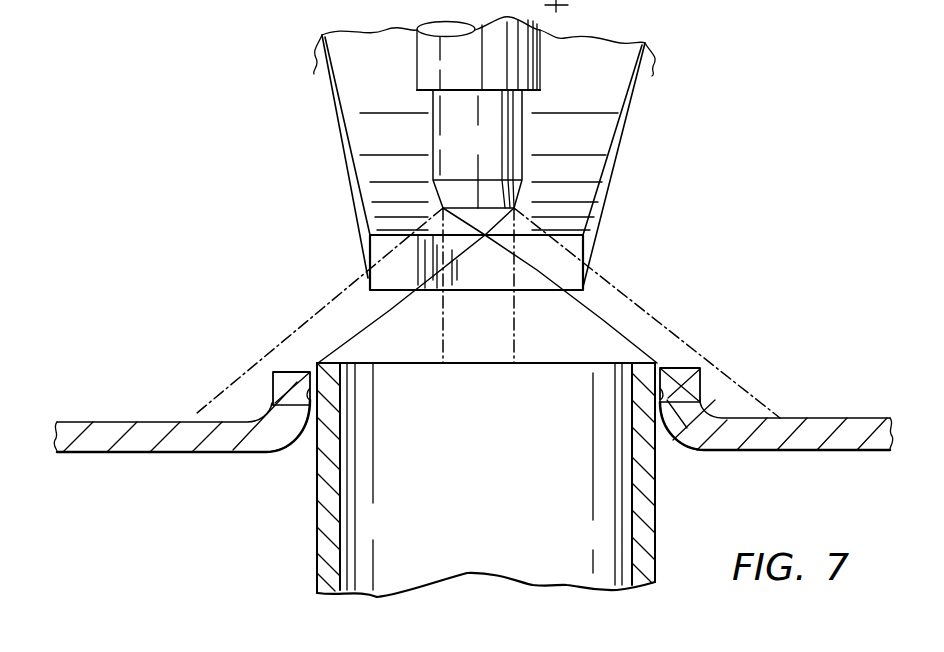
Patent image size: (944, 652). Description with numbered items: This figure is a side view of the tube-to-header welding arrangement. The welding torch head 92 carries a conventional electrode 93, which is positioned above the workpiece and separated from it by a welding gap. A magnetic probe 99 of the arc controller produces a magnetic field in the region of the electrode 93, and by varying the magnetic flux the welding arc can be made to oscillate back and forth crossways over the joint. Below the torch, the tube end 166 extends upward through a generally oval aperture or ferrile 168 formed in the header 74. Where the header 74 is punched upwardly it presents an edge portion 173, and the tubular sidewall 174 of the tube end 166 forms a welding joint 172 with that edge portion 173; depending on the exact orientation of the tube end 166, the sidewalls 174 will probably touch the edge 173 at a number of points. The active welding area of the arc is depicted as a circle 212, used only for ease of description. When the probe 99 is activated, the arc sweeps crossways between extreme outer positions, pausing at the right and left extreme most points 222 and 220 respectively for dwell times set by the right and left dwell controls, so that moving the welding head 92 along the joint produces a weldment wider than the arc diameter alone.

The welding torch head 92 is at (475, 71).
The electrode 93 is at (490, 154).
The magnetic probe 99 is at (581, 150).
The tube end 166 is at (500, 412).
The aperture 168 is at (300, 442).
The welding joint 172 is at (311, 350).
The edge portion 173 is at (273, 404).
The tubular sidewall 174 is at (328, 538).
The active welding area circle 212 is at (443, 318).
The left extreme point 220 is at (243, 373).
The right extreme point 222 is at (713, 374).
The header 74 is at (807, 428).